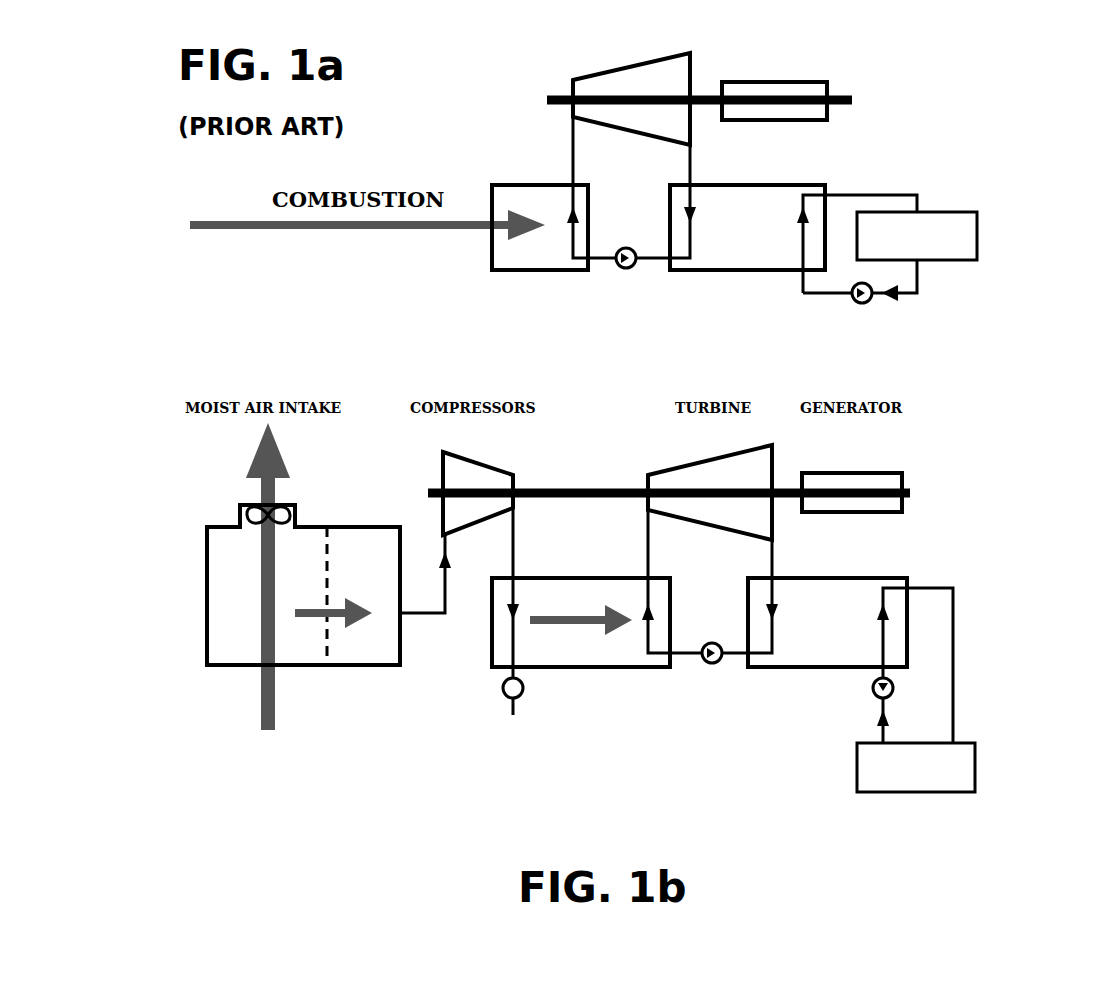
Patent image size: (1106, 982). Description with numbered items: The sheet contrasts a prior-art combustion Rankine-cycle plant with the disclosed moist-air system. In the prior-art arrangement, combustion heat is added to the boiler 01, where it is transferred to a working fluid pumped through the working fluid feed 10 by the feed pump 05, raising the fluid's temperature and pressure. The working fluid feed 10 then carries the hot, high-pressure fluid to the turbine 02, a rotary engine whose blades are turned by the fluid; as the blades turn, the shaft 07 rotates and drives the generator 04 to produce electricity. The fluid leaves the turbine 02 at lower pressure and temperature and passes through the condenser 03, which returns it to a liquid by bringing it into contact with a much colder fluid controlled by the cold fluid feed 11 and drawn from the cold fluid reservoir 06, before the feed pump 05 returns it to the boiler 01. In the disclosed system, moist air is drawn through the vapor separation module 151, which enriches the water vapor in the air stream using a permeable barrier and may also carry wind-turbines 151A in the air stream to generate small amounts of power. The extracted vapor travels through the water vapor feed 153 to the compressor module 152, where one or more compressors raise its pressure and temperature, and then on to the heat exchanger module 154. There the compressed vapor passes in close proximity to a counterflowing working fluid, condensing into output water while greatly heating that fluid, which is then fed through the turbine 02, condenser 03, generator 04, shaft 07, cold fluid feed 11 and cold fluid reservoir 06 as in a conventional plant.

In FIG. 1a, the working fluid feed 10 is at (573, 143).
In FIG. 1a, the boiler 01 is at (488, 205).
In FIG. 1a, the turbine 02 is at (612, 62).
In FIG. 1b, the turbine 02 is at (685, 455).
In FIG. 1a, the condenser 03 is at (770, 215).
In FIG. 1b, the condenser 03 is at (822, 648).
In FIG. 1a, the generator 04 is at (800, 70).
In FIG. 1b, the generator 04 is at (893, 463).
In FIG. 1a, the feed pump 05 is at (603, 293).
In FIG. 1b, the feed pump 05 is at (707, 673).
In FIG. 1a, the cold fluid reservoir 06 is at (960, 267).
In FIG. 1b, the cold fluid reservoir 06 is at (857, 768).
In FIG. 1a, the shaft 07 is at (840, 88).
In FIG. 1b, the shaft 07 is at (780, 498).
In FIG. 1a, the cold fluid feed 11 is at (905, 190).
In FIG. 1b, the cold fluid feed 11 is at (961, 707).
In FIG. 1b, the vapor separation module 151 is at (340, 527).
In FIG. 1b, the wind-turbines 151A is at (240, 513).
In FIG. 1b, the compressor module 152 is at (440, 465).
In FIG. 1b, the water vapor feed 153 is at (443, 622).
In FIG. 1b, the heat exchanger module 154 is at (625, 675).